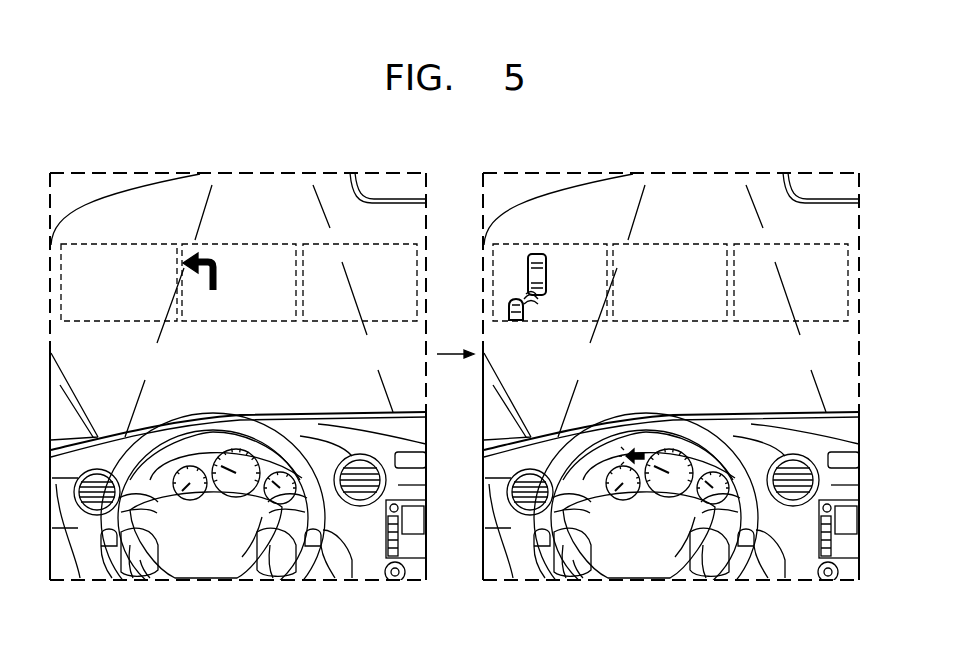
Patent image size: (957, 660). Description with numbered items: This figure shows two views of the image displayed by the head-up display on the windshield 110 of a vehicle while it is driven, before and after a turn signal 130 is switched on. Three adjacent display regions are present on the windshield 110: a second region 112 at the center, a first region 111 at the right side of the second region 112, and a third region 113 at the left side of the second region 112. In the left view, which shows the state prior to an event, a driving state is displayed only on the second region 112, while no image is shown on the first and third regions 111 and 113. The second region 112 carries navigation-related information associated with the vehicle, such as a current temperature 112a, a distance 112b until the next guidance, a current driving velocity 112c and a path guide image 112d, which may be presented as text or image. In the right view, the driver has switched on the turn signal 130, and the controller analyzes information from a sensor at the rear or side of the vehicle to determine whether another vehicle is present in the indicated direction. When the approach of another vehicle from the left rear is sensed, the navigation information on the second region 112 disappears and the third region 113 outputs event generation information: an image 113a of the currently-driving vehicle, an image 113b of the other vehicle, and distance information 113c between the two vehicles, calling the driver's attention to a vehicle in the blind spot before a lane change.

The windshield 110 is at (396, 222).
The first region 111 is at (356, 240).
The second region 112 is at (250, 246).
The current temperature 112a is at (277, 252).
The distance until the next guidance 112b is at (238, 268).
The current driving velocity 112c is at (240, 315).
The path guide image 112d is at (190, 258).
The third region 113 is at (118, 244).
The image of the currently-driving vehicle 113a is at (531, 252).
The image of the another vehicle 113b is at (512, 298).
The distance information 113c is at (553, 300).
The turn signal 130 is at (636, 464).